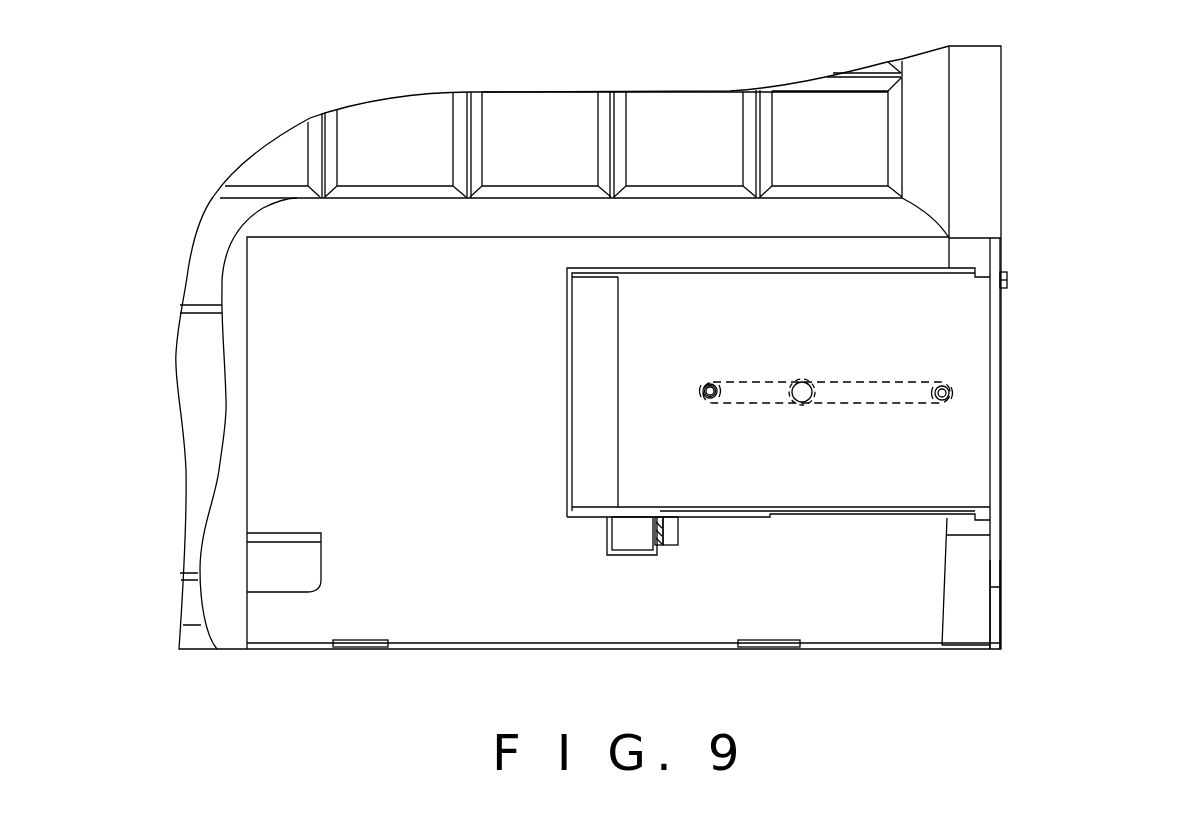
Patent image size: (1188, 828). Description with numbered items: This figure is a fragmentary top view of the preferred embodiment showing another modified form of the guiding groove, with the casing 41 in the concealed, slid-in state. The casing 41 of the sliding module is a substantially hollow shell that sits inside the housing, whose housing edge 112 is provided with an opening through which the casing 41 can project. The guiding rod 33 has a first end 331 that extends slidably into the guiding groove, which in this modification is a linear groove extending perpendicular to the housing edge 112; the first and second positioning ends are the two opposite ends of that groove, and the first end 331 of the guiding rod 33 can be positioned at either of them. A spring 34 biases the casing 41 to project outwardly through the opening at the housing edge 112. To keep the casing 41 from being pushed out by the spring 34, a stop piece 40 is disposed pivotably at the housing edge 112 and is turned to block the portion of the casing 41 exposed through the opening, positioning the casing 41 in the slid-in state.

The guiding rod 33 is at (758, 387).
The first end 331 is at (710, 384).
The spring 34 is at (657, 547).
The stop piece 40 is at (1007, 283).
The casing 41 is at (970, 360).
The housing edge 112 is at (1001, 613).